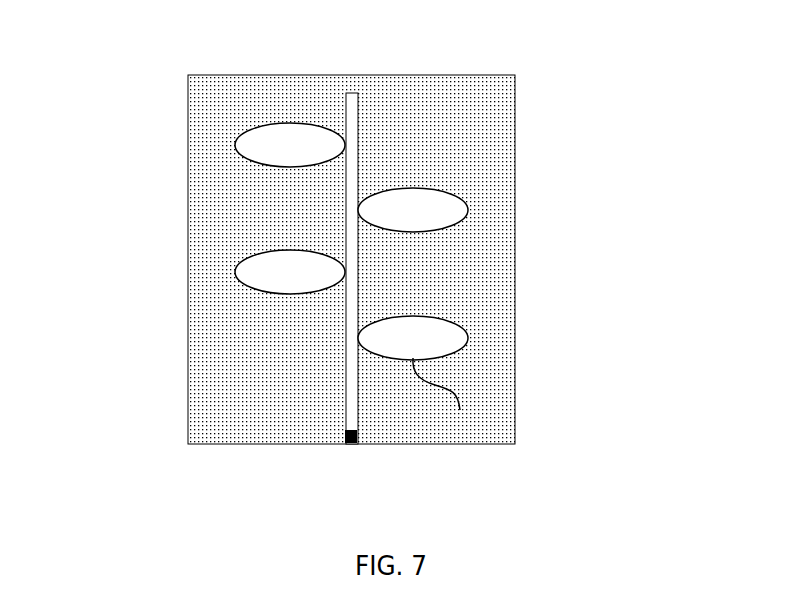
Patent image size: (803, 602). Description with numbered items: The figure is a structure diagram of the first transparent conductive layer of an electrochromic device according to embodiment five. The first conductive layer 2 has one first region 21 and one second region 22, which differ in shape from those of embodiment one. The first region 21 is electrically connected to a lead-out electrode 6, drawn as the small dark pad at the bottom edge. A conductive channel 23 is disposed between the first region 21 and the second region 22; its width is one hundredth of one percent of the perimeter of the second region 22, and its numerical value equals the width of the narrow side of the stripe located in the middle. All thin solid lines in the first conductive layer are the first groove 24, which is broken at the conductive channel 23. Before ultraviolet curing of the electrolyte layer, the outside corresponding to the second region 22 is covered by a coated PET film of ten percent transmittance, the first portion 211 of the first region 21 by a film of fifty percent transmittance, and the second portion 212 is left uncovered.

The first conductive layer 2 is at (386, 260).
The first region 21 is at (386, 239).
The first portion 211 is at (433, 203).
The second portion 212 is at (308, 139).
The second region 22 is at (252, 219).
The conductive channel 23 is at (348, 95).
The first groove 24 is at (450, 407).
The lead-out electrode 6 is at (347, 443).